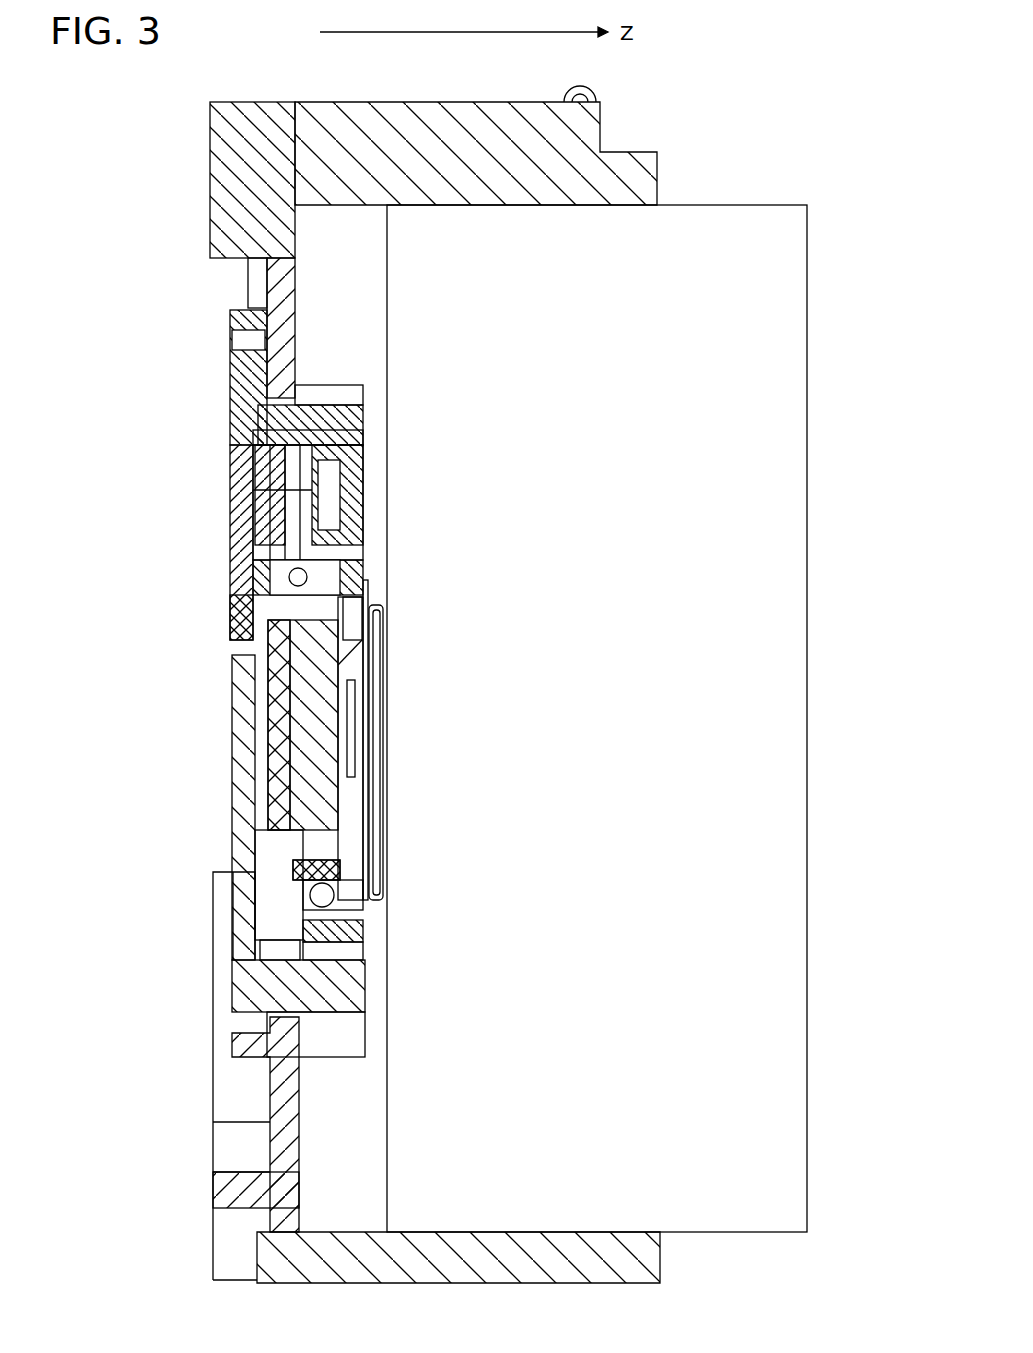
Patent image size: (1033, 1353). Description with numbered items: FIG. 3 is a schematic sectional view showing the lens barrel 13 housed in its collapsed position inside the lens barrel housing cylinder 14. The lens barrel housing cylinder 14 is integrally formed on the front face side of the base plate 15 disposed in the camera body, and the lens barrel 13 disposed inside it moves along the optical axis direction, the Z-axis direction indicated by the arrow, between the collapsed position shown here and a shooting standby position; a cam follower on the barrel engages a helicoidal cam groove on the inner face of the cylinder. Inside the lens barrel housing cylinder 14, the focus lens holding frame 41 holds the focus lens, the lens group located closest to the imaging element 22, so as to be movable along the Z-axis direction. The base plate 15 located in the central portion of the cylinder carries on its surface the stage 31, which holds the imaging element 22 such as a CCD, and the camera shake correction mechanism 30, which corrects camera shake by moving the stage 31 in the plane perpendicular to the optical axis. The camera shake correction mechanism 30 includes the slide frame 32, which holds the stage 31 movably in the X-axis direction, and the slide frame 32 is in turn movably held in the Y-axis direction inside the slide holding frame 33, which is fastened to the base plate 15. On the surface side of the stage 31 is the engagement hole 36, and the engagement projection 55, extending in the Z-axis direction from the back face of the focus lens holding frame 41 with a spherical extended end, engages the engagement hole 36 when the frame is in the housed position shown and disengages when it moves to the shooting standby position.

The lens barrel 13 is at (745, 205).
The lens barrel housing cylinder 14 is at (503, 101).
The base plate 15 is at (210, 213).
The imaging element 22 is at (300, 687).
The camera shake correction mechanism 30 is at (250, 760).
The stage 31 is at (270, 605).
The slide frame 32 is at (310, 930).
The slide holding frame 33 is at (330, 396).
The engagement hole 36 is at (310, 878).
The focus lens holding frame 41 is at (375, 797).
The engagement projection 55 is at (355, 875).